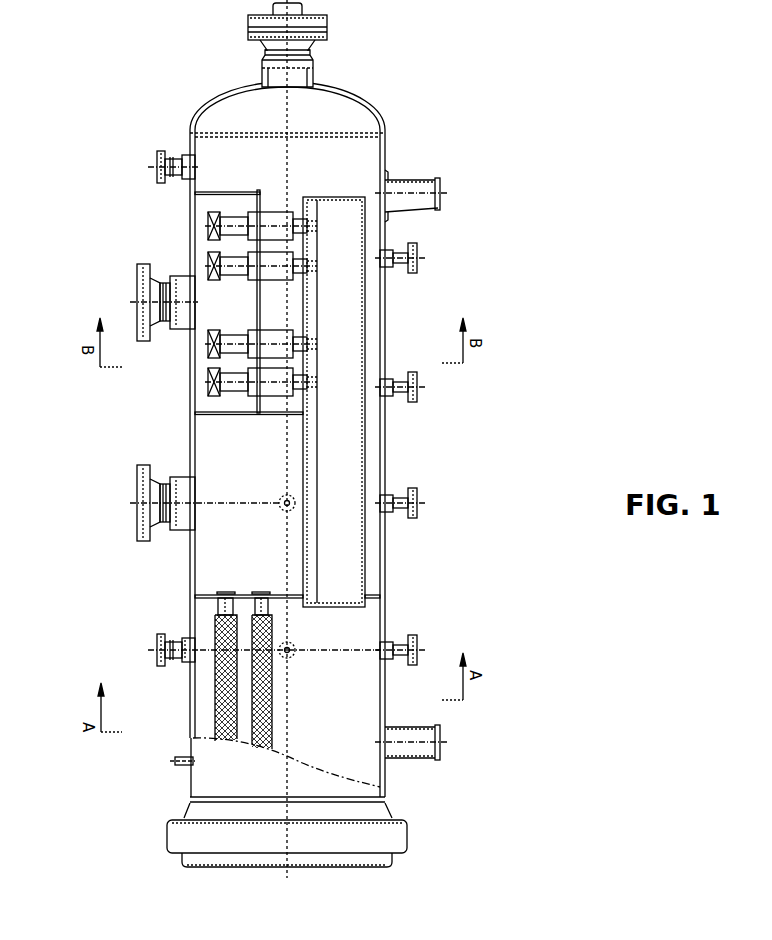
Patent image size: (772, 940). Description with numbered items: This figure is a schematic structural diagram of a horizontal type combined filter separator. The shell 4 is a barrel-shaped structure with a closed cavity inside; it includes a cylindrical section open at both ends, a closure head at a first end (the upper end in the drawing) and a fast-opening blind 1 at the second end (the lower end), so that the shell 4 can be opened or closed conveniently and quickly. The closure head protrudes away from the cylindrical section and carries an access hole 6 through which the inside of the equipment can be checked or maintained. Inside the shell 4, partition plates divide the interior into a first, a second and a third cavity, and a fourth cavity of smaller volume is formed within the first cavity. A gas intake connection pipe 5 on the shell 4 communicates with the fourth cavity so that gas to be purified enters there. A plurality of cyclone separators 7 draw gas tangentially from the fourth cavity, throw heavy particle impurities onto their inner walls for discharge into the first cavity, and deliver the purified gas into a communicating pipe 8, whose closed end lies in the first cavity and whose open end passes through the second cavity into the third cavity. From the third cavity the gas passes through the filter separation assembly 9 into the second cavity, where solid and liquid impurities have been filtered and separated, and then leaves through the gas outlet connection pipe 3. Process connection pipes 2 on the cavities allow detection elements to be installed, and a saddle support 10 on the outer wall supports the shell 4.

The fast-opening blind 1 is at (167, 842).
The process connection pipe 2 is at (155, 637).
The gas outlet connection pipe 3 is at (135, 497).
The shell 4 is at (190, 428).
The gas intake connection pipe 5 is at (135, 290).
The access hole 6 is at (323, 68).
The cyclone separator 7 is at (275, 387).
The communicating pipe 8 is at (350, 538).
The filter separation assembly 9 is at (273, 670).
The saddle support 10 is at (262, 748).